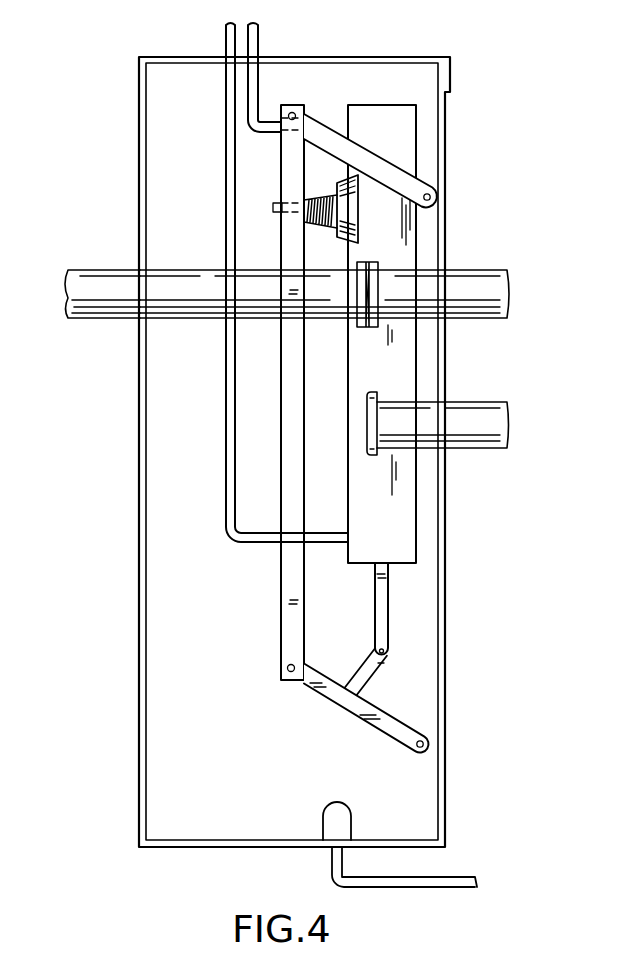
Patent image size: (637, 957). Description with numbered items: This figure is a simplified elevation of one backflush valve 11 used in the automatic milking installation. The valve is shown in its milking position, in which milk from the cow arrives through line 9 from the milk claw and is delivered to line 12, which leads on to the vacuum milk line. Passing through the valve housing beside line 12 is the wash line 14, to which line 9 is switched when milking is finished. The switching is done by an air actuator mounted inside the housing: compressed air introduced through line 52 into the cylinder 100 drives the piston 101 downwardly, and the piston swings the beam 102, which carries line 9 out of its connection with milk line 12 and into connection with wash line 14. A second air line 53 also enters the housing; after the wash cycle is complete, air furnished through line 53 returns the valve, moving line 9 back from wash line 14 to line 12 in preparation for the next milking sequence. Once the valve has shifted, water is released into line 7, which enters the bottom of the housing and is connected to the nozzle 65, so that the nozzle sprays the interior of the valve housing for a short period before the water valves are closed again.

The line 7 is at (440, 878).
The line 9 is at (84, 268).
The backflush valve 11 is at (443, 783).
The line 12 is at (470, 272).
The wash line 14 is at (483, 450).
The line 52 is at (259, 44).
The line 53 is at (226, 40).
The nozzle 65 is at (323, 830).
The cylinder 100 is at (415, 130).
The piston 101 is at (385, 607).
The beam 102 is at (282, 612).